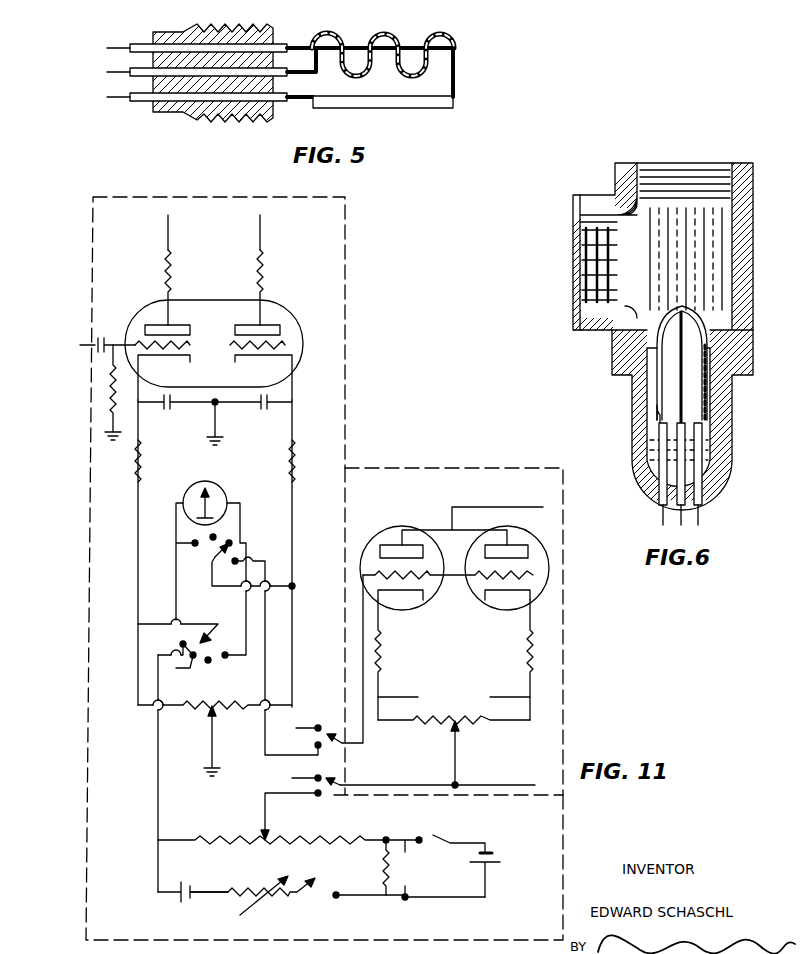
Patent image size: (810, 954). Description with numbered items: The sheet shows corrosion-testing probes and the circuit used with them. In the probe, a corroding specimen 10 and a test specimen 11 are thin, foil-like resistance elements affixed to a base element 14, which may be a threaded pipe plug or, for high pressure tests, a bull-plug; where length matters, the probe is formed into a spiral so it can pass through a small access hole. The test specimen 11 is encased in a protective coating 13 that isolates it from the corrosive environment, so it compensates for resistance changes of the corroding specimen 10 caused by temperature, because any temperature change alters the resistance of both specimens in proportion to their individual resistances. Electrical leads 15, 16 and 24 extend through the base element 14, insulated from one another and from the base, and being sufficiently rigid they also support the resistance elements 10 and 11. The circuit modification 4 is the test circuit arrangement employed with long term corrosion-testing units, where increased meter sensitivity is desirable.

In FIG. 11, the amplifier circuit unit 4 is at (123, 233).
In FIG. 5, the corroding specimen 10 is at (443, 110).
In FIG. 6, the corroding specimen 10 is at (650, 369).
In FIG. 5, the test specimen 11 is at (446, 40).
In FIG. 6, the test specimen 11 is at (683, 356).
In FIG. 5, the protective coating 13 is at (386, 37).
In FIG. 6, the protective coating 13 is at (697, 318).
In FIG. 5, the base element 14 is at (195, 29).
In FIG. 6, the base element 14 is at (712, 480).
In FIG. 5, the electrical lead 15 is at (310, 75).
In FIG. 6, the electrical lead 15 is at (706, 425).
In FIG. 5, the electrical lead 16 is at (296, 102).
In FIG. 6, the electrical lead 16 is at (658, 426).
In FIG. 5, the electrical lead 24 is at (300, 48).
In FIG. 6, the electrical lead 24 is at (679, 316).